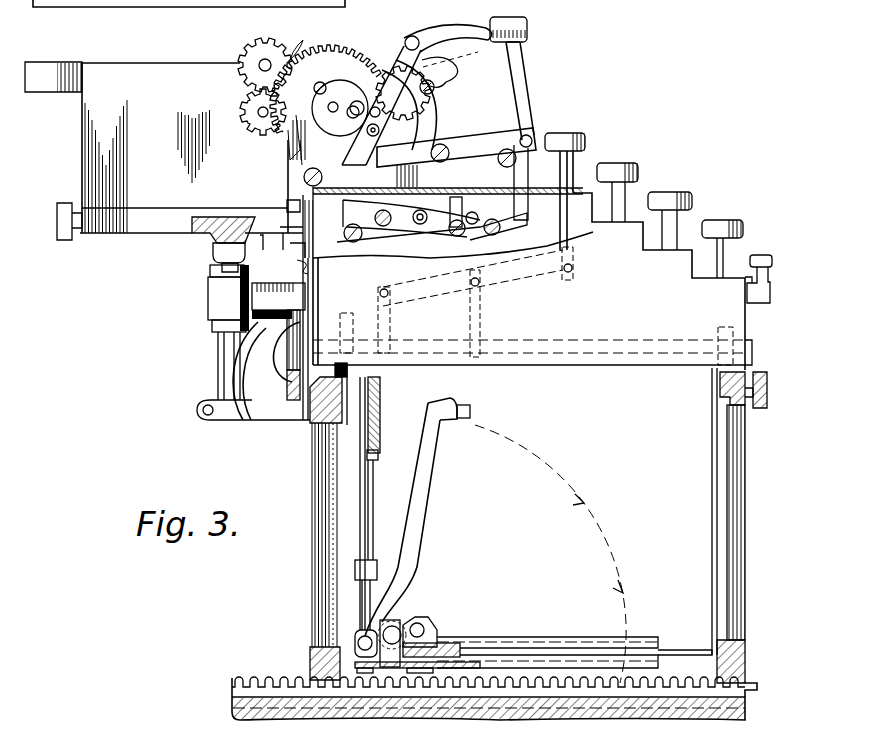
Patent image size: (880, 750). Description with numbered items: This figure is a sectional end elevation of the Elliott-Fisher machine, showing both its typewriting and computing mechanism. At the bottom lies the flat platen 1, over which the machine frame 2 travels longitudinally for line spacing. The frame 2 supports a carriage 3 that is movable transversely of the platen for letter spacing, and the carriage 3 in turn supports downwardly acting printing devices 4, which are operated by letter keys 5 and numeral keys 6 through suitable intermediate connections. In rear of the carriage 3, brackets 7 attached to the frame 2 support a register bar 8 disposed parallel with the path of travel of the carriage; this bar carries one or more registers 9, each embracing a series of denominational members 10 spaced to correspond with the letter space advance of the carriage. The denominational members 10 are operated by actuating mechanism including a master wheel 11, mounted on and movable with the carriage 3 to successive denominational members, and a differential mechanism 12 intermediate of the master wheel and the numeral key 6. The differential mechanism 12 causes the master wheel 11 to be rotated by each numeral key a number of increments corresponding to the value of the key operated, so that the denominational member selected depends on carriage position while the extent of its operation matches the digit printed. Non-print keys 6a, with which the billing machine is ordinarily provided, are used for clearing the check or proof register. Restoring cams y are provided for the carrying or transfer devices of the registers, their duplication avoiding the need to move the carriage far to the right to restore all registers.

The flat platen 1 is at (368, 718).
The machine frame 2 is at (308, 573).
The carriage 3 is at (615, 337).
The printing devices 4 is at (417, 502).
The letter keys 5 is at (677, 193).
The numeral keys 6 is at (563, 140).
The non-print keys 6a is at (529, 28).
The brackets 7 is at (218, 307).
The register bar 8 is at (213, 248).
The register 9 is at (156, 151).
The denominational members 10 is at (288, 52).
The master wheel 11 is at (423, 117).
The differential mechanism 12 is at (453, 134).
The restoring cams y is at (302, 190).